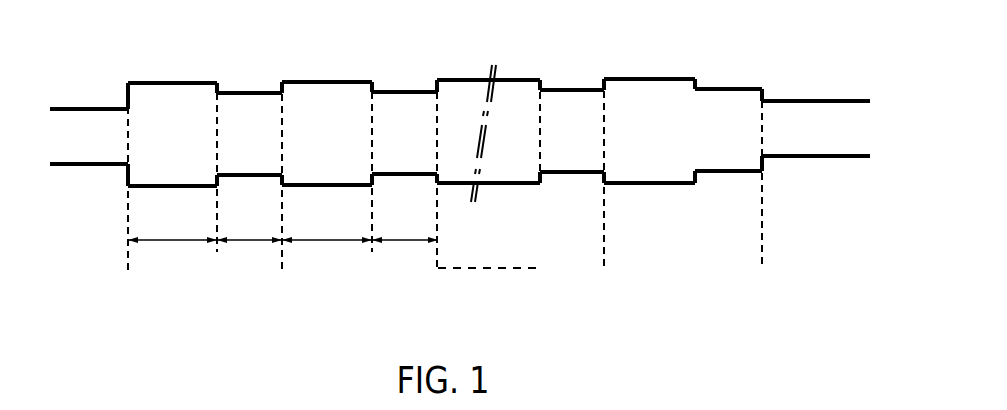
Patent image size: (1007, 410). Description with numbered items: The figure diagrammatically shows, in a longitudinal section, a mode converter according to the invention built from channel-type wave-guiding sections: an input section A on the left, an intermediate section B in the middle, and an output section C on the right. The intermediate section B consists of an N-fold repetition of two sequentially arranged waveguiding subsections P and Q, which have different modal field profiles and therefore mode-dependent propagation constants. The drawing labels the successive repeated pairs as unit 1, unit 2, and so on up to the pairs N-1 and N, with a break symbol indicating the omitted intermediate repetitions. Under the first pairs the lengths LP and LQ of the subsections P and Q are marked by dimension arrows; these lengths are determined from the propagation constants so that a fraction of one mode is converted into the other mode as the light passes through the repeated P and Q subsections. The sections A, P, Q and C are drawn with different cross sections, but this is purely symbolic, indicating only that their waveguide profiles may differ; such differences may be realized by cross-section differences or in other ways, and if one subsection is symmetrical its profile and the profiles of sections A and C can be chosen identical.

The input section A is at (89, 136).
The intermediate section B is at (760, 69).
The output section C is at (816, 128).
The waveguiding subsection P is at (172, 177).
The waveguiding subsection Q is at (249, 167).
The first unit cell (P-Q pair) 1 is at (205, 200).
The second unit cell (P-Q pair) 2 is at (283, 270).
The (N-1)th unit cell N-1 is at (605, 269).
The number of repetitions N is at (605, 268).
The length of subsection P LP is at (172, 224).
The length of subsection Q LQ is at (249, 224).